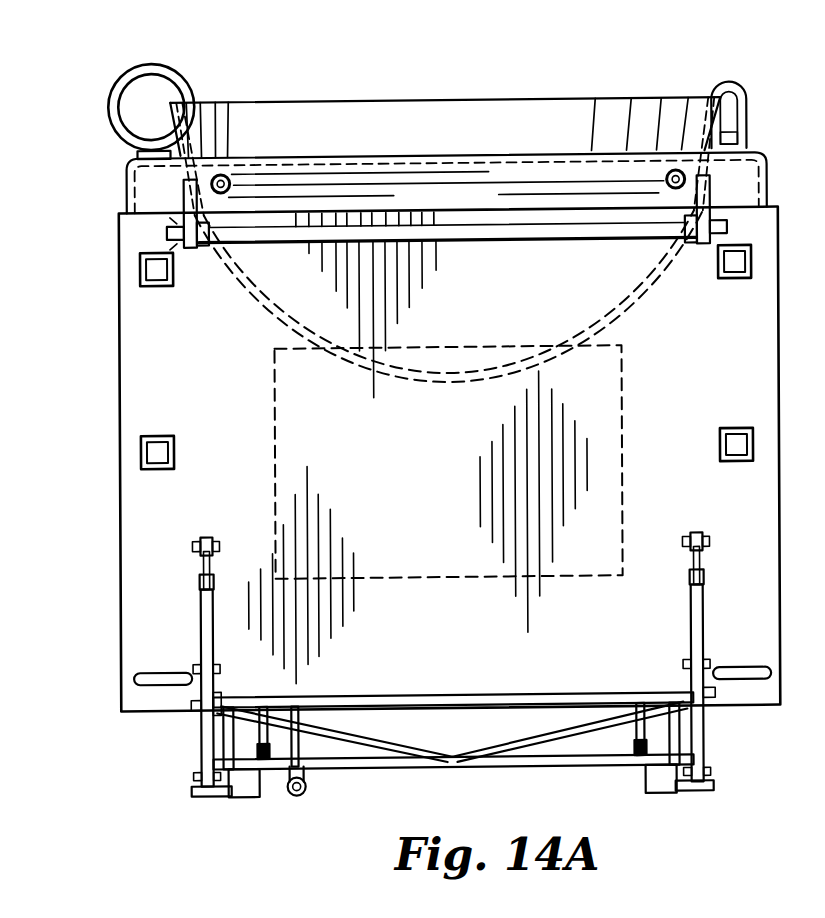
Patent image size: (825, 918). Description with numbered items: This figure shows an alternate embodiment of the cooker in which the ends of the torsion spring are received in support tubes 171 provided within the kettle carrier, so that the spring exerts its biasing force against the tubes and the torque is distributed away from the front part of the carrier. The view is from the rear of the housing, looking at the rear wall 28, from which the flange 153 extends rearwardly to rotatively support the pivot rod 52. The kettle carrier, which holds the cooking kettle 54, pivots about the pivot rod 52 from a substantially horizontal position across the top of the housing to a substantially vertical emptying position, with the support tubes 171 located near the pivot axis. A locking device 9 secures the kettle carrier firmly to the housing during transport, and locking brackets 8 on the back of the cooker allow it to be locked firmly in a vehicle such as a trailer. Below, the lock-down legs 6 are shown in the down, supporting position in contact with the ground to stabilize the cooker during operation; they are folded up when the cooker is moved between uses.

The locking device 9 is at (158, 70).
The cooking kettle 54 is at (524, 117).
The support tubes 171 is at (229, 173).
The flange 153 is at (707, 200).
The rear wall 28 is at (203, 353).
The pivot rod 52 is at (590, 231).
The locking brackets 8 is at (172, 672).
The legs 6 is at (707, 740).